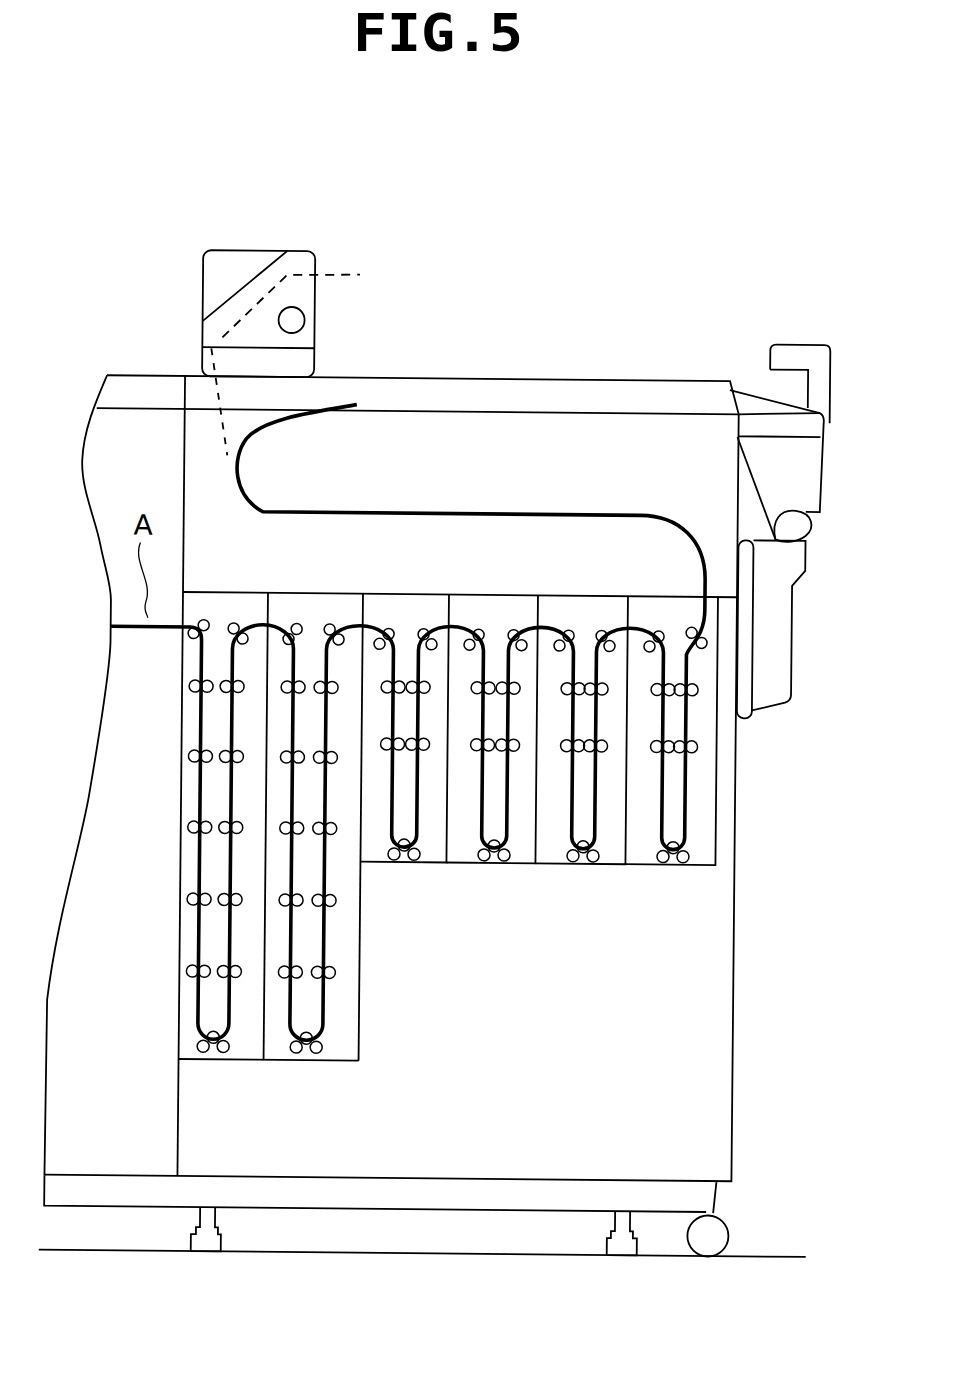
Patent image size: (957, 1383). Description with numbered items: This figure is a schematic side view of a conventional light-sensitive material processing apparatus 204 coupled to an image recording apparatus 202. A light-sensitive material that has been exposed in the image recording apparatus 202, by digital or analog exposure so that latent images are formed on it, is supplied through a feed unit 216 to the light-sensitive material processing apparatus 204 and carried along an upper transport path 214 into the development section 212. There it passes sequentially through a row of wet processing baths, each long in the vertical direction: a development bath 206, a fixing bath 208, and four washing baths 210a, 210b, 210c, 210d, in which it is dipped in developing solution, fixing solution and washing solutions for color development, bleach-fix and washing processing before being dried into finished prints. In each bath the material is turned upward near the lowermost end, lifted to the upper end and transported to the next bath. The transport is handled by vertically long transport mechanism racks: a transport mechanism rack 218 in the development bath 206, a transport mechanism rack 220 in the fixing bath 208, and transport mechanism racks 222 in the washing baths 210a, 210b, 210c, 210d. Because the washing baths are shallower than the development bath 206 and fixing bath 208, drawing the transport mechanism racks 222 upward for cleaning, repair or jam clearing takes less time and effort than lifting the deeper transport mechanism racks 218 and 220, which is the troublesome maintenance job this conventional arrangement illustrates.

The image recording apparatus 202 is at (143, 367).
The light-sensitive material processing apparatus 204 is at (462, 211).
The development bath 206 is at (244, 1037).
The fixing bath 208 is at (337, 1040).
The washing bath 210a is at (426, 832).
The washing bath 210b is at (522, 848).
The washing bath 210c is at (612, 847).
The washing bath 210d is at (697, 848).
The development section 212 is at (644, 1123).
The sheet conveying path 214 is at (682, 468).
The sheet feed unit 216 is at (356, 342).
The transport mechanism rack 218 is at (222, 619).
The transport mechanism rack 220 is at (315, 622).
The transport mechanism racks 222 is at (402, 622).